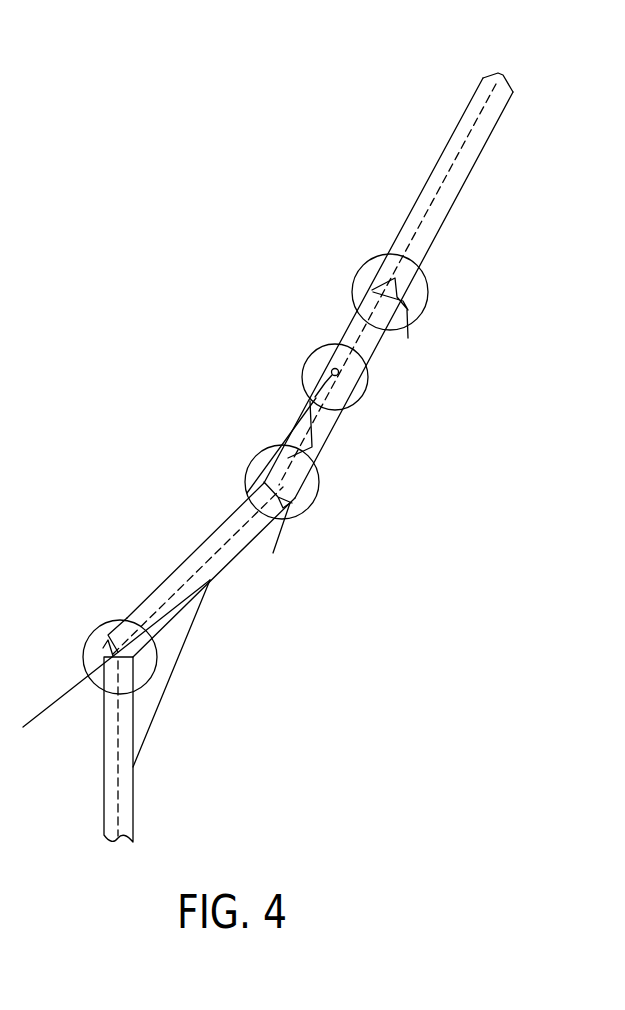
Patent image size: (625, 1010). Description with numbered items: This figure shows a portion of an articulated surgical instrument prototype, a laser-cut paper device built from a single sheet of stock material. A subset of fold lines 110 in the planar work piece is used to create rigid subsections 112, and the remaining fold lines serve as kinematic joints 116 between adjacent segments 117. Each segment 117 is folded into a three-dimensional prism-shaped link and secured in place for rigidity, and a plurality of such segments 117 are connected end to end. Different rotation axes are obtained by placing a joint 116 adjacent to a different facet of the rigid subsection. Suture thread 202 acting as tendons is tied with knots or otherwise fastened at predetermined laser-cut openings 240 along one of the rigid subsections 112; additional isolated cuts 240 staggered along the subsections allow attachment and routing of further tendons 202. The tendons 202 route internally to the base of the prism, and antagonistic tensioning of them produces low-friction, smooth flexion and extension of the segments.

The fold lines 110 is at (477, 119).
The rigid subsection 112 is at (486, 78).
The kinematic joint 116 is at (428, 297).
The segment 117 is at (432, 40).
The laser-cut openings 240 is at (320, 343).
The suture thread 202 is at (152, 724).